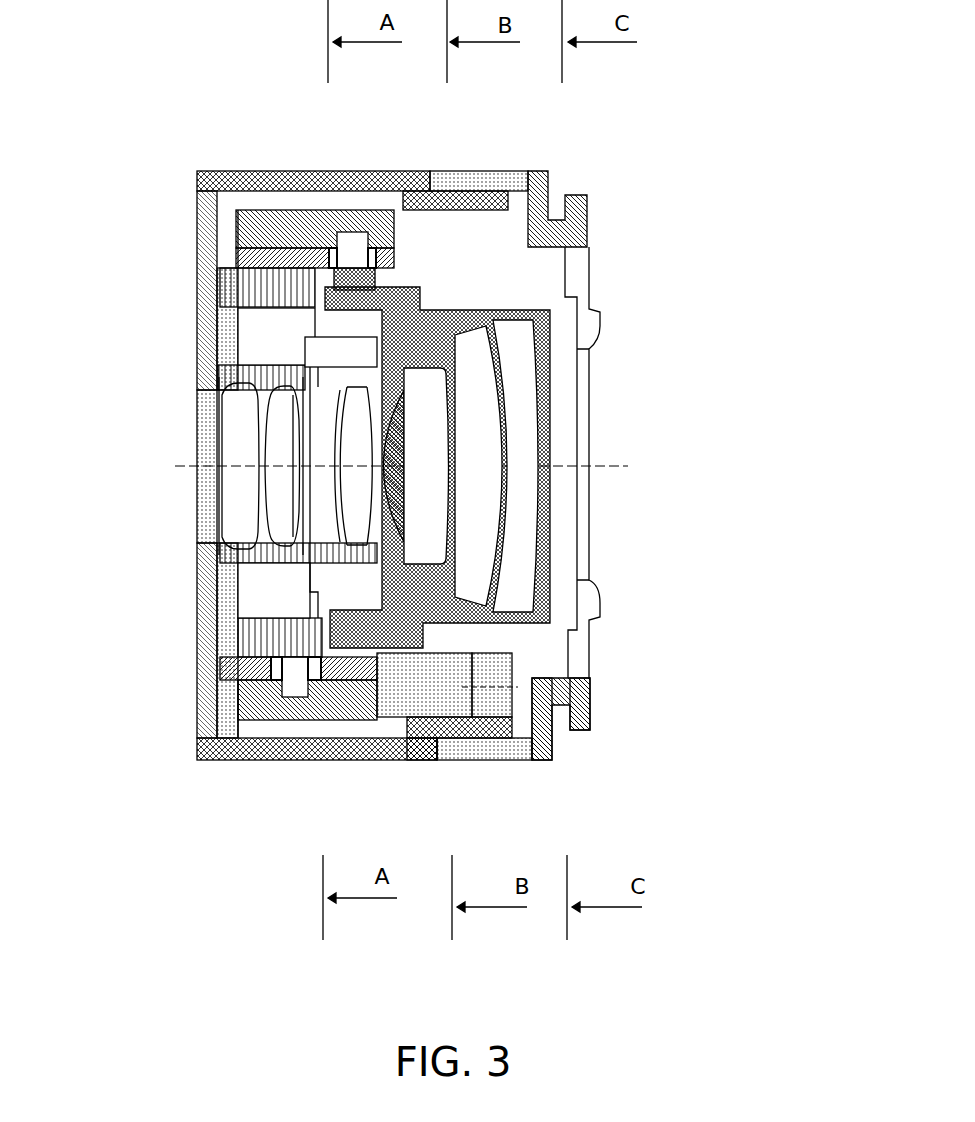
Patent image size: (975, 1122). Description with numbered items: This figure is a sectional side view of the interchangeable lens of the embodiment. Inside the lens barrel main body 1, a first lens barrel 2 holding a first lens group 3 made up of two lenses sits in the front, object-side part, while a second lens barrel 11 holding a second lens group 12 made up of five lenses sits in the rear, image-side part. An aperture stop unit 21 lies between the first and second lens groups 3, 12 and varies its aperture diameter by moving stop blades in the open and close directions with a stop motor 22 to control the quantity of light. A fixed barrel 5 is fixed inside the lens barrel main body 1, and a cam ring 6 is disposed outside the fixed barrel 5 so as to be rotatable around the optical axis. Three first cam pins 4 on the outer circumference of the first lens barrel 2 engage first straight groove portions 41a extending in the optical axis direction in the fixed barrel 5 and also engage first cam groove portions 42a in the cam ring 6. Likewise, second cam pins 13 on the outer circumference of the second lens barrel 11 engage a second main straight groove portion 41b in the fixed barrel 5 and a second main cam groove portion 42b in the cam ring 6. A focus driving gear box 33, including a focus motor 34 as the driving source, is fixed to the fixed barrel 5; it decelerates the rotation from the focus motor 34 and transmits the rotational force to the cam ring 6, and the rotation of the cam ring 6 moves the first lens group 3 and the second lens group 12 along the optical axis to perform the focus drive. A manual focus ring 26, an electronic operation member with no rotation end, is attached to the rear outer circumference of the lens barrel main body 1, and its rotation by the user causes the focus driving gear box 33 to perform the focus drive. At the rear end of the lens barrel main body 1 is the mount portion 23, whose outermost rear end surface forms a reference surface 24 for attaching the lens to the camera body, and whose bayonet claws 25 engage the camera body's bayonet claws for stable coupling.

The lens barrel main body 1 is at (445, 193).
The first lens barrel 2 is at (280, 375).
The first lens group 3 is at (275, 450).
The first cam pins 4 is at (300, 680).
The fixed barrel 5 is at (262, 253).
The cam ring 6 is at (275, 235).
The second lens barrel 11 is at (425, 340).
The second lens group 12 is at (532, 435).
The second cam pins 13 is at (362, 243).
The aperture stop unit 21 is at (320, 557).
The stop motor 22 is at (362, 352).
The mount portion 23 is at (588, 683).
The reference surface 24 is at (543, 728).
The bayonet claws 25 is at (588, 717).
The manual focus ring 26 is at (505, 180).
The focus driving gear box 33 is at (450, 683).
The focus motor 34 is at (493, 660).
The first straight groove portions 41a is at (272, 670).
The second main straight groove portion 41b is at (372, 252).
The first cam groove portions 42a is at (283, 695).
The second main cam groove portion 42b is at (353, 225).